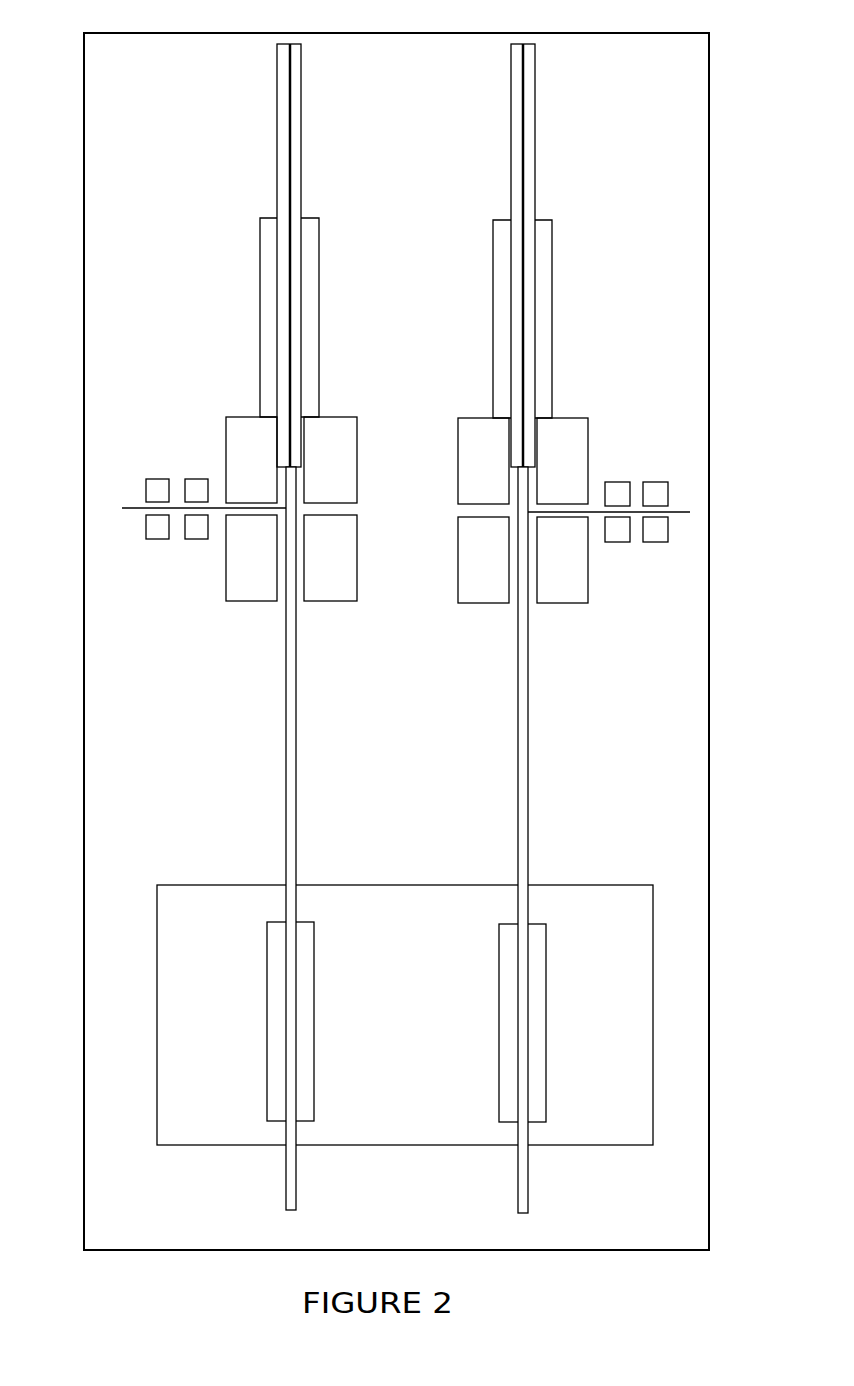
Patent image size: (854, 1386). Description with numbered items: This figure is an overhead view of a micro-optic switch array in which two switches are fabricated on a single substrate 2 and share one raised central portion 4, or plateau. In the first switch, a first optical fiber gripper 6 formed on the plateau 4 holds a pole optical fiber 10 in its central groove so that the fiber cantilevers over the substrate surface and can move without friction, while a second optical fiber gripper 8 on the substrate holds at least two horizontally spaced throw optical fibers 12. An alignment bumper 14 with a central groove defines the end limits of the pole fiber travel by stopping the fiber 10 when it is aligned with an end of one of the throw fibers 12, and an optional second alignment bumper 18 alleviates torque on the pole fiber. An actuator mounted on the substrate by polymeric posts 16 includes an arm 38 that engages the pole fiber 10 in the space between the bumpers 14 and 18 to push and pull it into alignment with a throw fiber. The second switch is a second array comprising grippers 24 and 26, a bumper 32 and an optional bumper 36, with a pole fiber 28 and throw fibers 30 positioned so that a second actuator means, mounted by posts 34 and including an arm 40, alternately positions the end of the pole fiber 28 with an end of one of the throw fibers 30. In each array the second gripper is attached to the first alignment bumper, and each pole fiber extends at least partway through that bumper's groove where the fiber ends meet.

The substrate 2 is at (145, 702).
The raised central portion 4 is at (392, 1115).
The first optical fiber gripper 6 is at (303, 994).
The second optical fiber gripper 8 is at (267, 337).
The pole optical fiber 10 is at (290, 1157).
The throw optical fibers 12 is at (283, 150).
The alignment bumper 14 is at (253, 461).
The polymeric posts 16 is at (158, 492).
The second alignment bumper 18 is at (240, 578).
The gripper 24 is at (508, 1010).
The gripper 26 is at (543, 325).
The pole fiber 28 is at (525, 1175).
The throw fibers 30 is at (527, 158).
The bumper 32 is at (567, 457).
The posts 34 is at (653, 495).
The bumper 36 is at (565, 570).
The arm 38 is at (135, 515).
The arm 40 is at (676, 517).